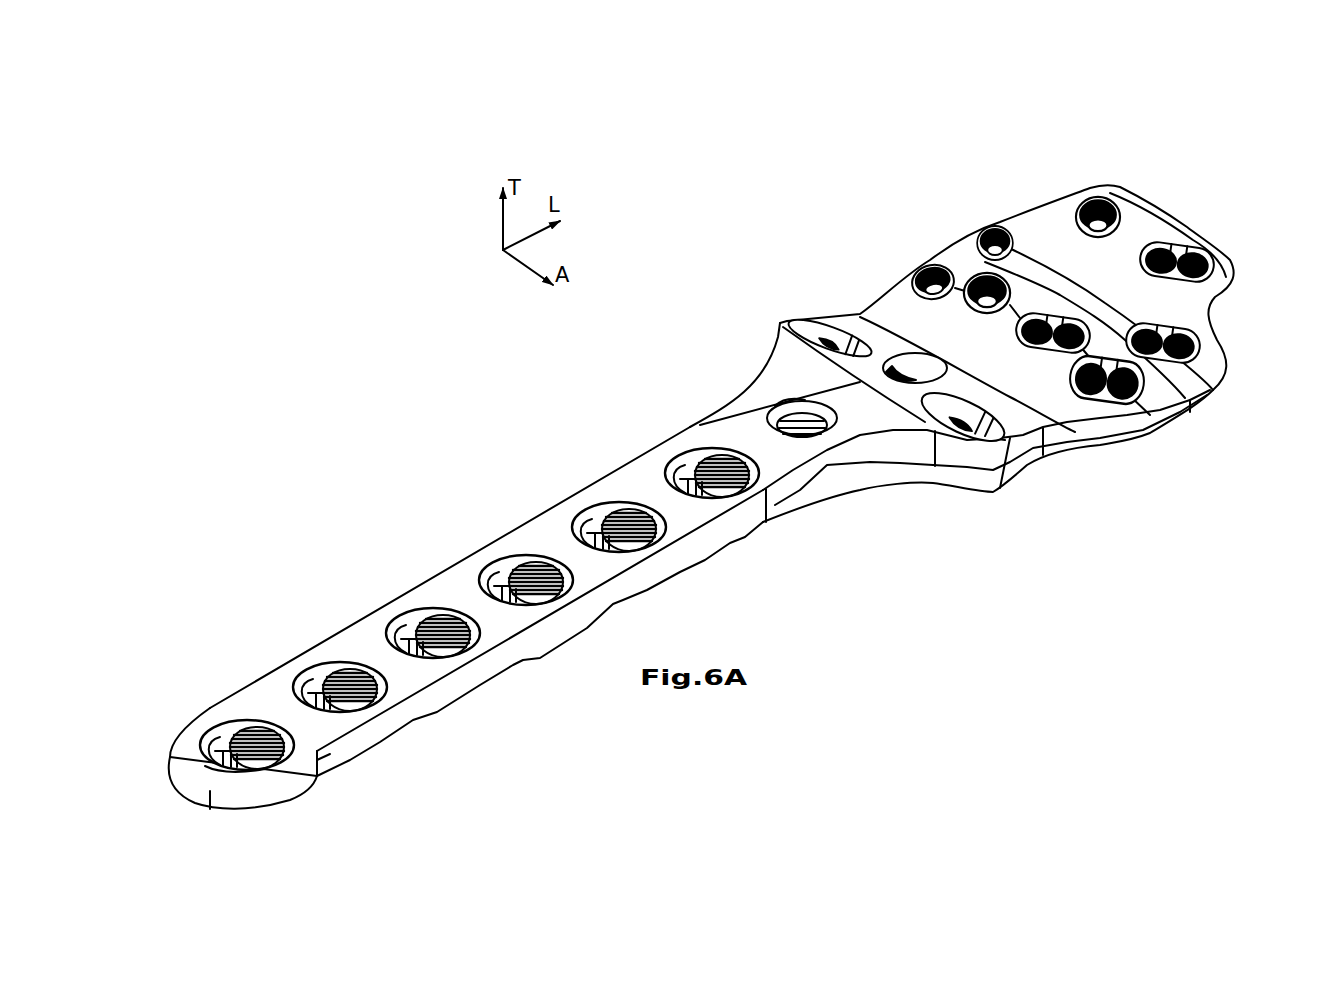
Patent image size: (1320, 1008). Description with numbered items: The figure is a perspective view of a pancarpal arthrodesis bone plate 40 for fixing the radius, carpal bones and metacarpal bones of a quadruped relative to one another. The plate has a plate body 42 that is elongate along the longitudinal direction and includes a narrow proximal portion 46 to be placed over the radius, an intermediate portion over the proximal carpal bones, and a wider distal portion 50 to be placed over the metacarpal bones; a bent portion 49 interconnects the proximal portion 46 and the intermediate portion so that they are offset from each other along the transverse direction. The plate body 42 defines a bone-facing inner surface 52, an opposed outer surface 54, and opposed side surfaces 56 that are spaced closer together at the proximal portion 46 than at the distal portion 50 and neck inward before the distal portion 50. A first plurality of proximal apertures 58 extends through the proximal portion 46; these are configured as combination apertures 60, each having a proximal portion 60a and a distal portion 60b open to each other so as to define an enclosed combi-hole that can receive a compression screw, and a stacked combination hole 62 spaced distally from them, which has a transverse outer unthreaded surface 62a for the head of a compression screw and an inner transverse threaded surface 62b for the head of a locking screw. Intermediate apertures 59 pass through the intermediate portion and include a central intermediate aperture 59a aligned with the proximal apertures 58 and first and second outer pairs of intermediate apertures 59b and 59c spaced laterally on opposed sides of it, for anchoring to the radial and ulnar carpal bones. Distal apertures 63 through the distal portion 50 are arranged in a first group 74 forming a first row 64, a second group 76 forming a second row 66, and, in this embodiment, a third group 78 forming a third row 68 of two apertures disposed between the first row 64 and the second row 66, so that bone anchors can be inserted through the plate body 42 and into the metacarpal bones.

The pancarpal arthrodesis bone plate 40 is at (543, 440).
The plate body 42 is at (480, 545).
The proximal portion 46 is at (518, 647).
The bent portion 49 is at (793, 343).
The distal portion 50 is at (1117, 440).
The bone-facing inner surface 52 is at (660, 587).
The outer surface 54 is at (690, 436).
The side surfaces 56 is at (432, 583).
The proximal apertures 58 is at (335, 670).
The intermediate apertures 59 is at (800, 317).
The central intermediate aperture 59a is at (910, 352).
The first outer pair of intermediate apertures 59b is at (830, 330).
The second outer pair of intermediate apertures 59c is at (990, 437).
The combination aperture 60 is at (243, 722).
The proximal portion of combination aperture 60a is at (240, 770).
The distal portion of combination aperture 60b is at (317, 762).
The stacked combination hole 62 is at (763, 405).
The transverse outer unthreaded surface 62a is at (772, 400).
The inner transverse threaded surface 62b is at (817, 440).
The distal apertures 63 is at (1207, 268).
The first row 64 is at (907, 267).
The second row 66 is at (1094, 190).
The third row 68 is at (982, 224).
The first group of distal apertures 74 is at (923, 262).
The second group of distal apertures 76 is at (1080, 211).
The third group of distal apertures 78 is at (1200, 380).